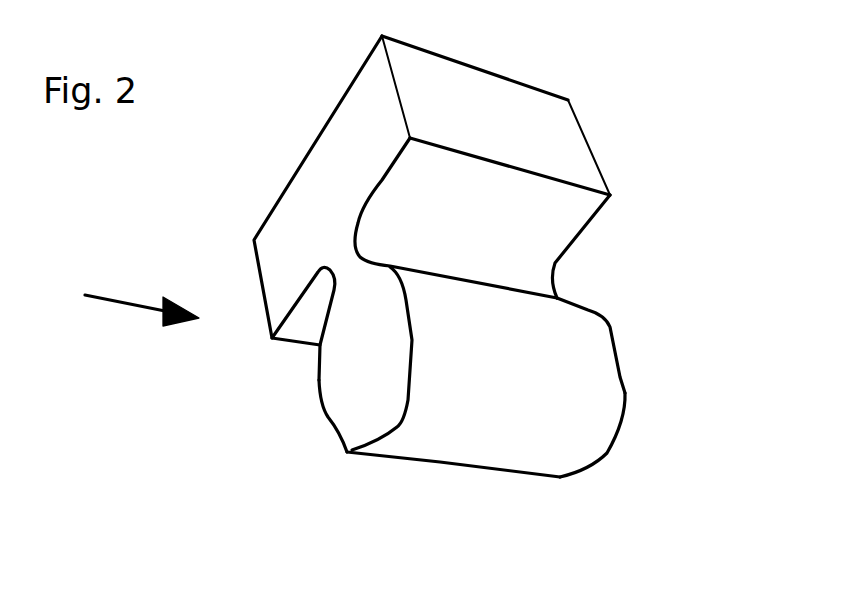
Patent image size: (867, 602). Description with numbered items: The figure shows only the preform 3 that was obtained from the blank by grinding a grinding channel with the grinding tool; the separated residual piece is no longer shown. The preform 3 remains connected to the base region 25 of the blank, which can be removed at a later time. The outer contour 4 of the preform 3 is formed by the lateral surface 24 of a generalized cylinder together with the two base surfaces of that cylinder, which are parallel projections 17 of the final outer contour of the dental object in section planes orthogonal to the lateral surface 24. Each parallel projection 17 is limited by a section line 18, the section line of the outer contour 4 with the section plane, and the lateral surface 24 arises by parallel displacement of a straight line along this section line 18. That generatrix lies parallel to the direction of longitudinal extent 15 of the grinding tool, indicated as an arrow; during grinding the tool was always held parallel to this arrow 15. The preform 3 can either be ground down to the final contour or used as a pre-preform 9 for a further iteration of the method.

The preform 3 is at (505, 190).
The pre-preform 9 is at (633, 318).
The base region 25 is at (521, 100).
The lateral surface 24 is at (503, 427).
The outer contour 4 is at (592, 380).
The parallel projection 17 is at (353, 403).
The section line 18 is at (320, 380).
The direction of longitudinal extent 15 is at (136, 305).